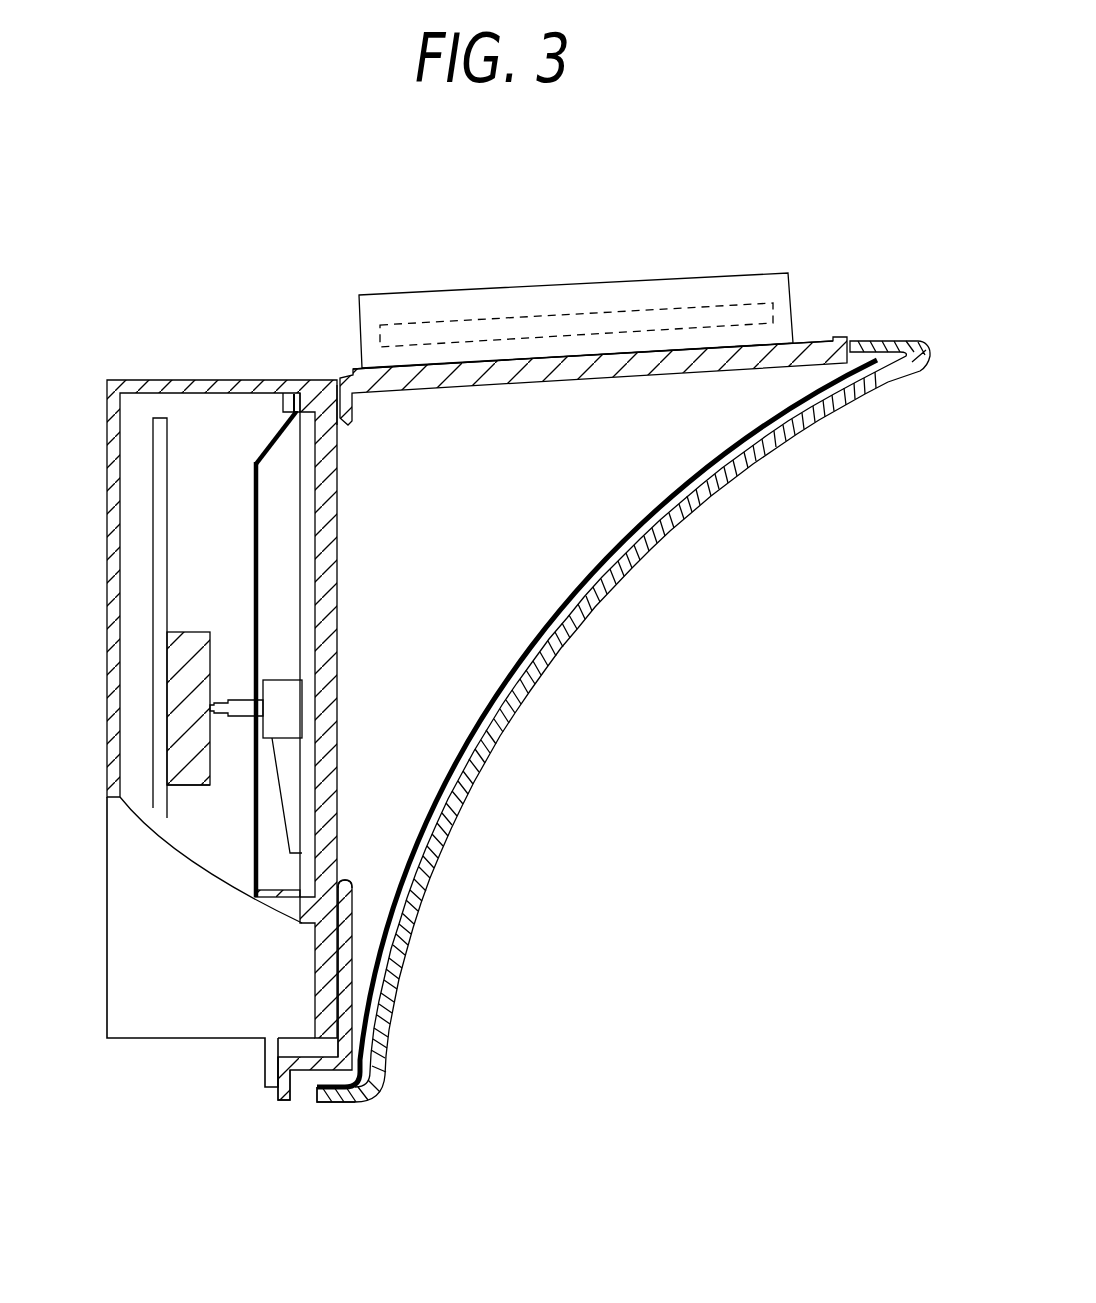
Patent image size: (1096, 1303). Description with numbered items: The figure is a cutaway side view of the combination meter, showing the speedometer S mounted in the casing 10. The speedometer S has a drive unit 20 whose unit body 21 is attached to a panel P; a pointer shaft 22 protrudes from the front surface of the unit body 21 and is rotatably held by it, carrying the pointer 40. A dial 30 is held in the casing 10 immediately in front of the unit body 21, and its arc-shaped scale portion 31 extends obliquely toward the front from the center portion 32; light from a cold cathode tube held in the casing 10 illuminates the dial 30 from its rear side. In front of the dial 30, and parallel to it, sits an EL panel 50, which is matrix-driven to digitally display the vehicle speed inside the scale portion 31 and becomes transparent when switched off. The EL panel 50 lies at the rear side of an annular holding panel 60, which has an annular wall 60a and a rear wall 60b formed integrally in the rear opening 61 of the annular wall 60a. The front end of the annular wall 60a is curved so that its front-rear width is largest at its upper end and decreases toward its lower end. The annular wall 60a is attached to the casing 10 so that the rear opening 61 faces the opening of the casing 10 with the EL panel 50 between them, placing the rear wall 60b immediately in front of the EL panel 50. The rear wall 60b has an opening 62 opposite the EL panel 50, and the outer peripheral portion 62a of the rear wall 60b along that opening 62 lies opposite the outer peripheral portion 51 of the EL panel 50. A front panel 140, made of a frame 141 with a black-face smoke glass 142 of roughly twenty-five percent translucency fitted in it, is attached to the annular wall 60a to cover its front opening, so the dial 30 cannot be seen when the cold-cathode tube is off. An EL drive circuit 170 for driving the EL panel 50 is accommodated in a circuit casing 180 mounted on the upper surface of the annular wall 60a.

The casing 10 is at (214, 364).
The drive unit 20 is at (191, 630).
The unit body 21 is at (180, 784).
The pointer shaft 22 is at (217, 718).
The dial 30 is at (282, 560).
The scale portion 31 is at (276, 442).
The center portion 32 is at (255, 490).
The pointer 40 is at (308, 699).
The EL panel 50 is at (341, 633).
The outer peripheral portion 51 is at (327, 408).
The holding panel 60 is at (808, 327).
The annular wall 60a is at (490, 353).
The rear wall 60b is at (363, 958).
The rear opening 61 is at (283, 1104).
The opening 62 is at (322, 882).
The outer peripheral portion 62a is at (347, 882).
The front panel 140 is at (583, 628).
The frame 141 is at (335, 1104).
The smoke glass 142 is at (522, 706).
The EL drive circuit 170 is at (710, 300).
The circuit casing 180 is at (632, 277).
The panel P is at (153, 492).
The speedometer S is at (398, 747).